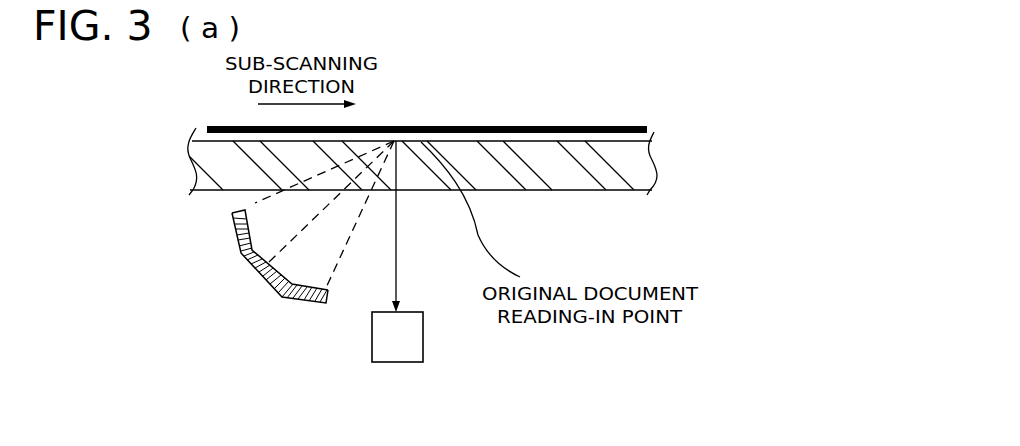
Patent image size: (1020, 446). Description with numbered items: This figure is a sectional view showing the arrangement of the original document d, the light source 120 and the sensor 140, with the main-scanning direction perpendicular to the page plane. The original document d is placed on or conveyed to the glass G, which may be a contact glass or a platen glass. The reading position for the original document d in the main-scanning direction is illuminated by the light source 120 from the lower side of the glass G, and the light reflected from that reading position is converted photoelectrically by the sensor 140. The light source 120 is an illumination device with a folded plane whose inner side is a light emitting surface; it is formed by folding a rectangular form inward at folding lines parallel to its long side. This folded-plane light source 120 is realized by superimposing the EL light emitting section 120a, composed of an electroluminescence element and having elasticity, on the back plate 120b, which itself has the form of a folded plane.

The light source 120 is at (62, 227).
The EL light emitting section 120a is at (255, 212).
The back plate 120b is at (250, 262).
The sensor 140 is at (419, 311).
The original document d is at (492, 124).
The glass G is at (588, 190).